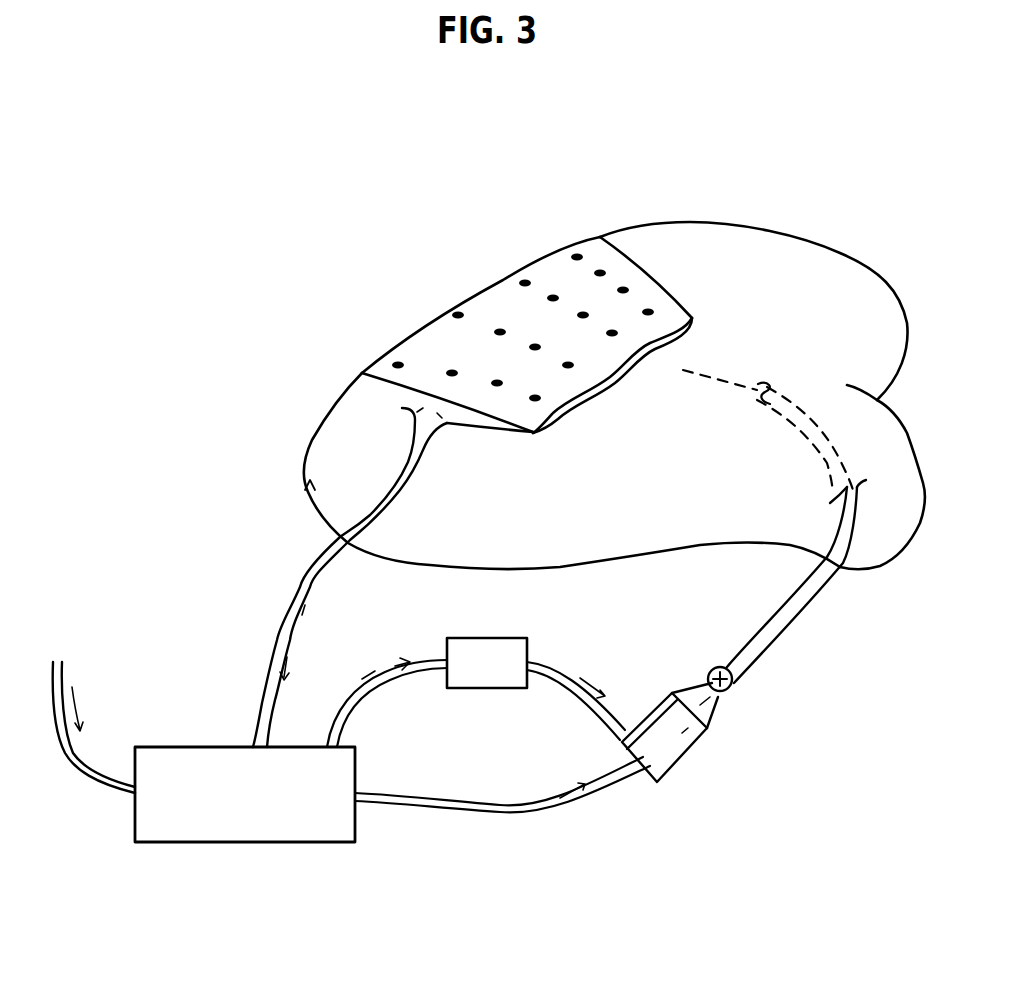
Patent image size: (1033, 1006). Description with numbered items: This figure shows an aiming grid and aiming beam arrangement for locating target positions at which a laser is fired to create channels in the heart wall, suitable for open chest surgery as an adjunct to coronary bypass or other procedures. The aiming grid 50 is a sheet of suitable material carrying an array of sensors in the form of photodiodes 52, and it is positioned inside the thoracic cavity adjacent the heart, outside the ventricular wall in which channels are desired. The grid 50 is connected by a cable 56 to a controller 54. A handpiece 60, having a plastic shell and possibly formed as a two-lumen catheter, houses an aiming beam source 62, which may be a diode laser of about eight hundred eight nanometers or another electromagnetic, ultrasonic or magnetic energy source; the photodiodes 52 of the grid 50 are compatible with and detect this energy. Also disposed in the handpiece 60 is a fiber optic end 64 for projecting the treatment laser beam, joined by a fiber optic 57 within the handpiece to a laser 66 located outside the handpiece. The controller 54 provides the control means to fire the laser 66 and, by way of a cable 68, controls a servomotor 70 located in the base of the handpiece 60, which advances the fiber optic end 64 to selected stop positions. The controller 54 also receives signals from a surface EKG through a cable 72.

The aiming grid 50 is at (503, 293).
The photodiodes 52 is at (452, 313).
The controller 54 is at (253, 842).
The cable 56 is at (300, 585).
The optical fiber 57 is at (595, 707).
The handpiece 60 is at (773, 627).
The aiming beam source 62 is at (760, 380).
The fiber optic end 64 is at (760, 400).
The laser 66 is at (490, 637).
The cable 68 is at (503, 816).
The servomotor 70 is at (682, 753).
The cable 72 is at (60, 663).